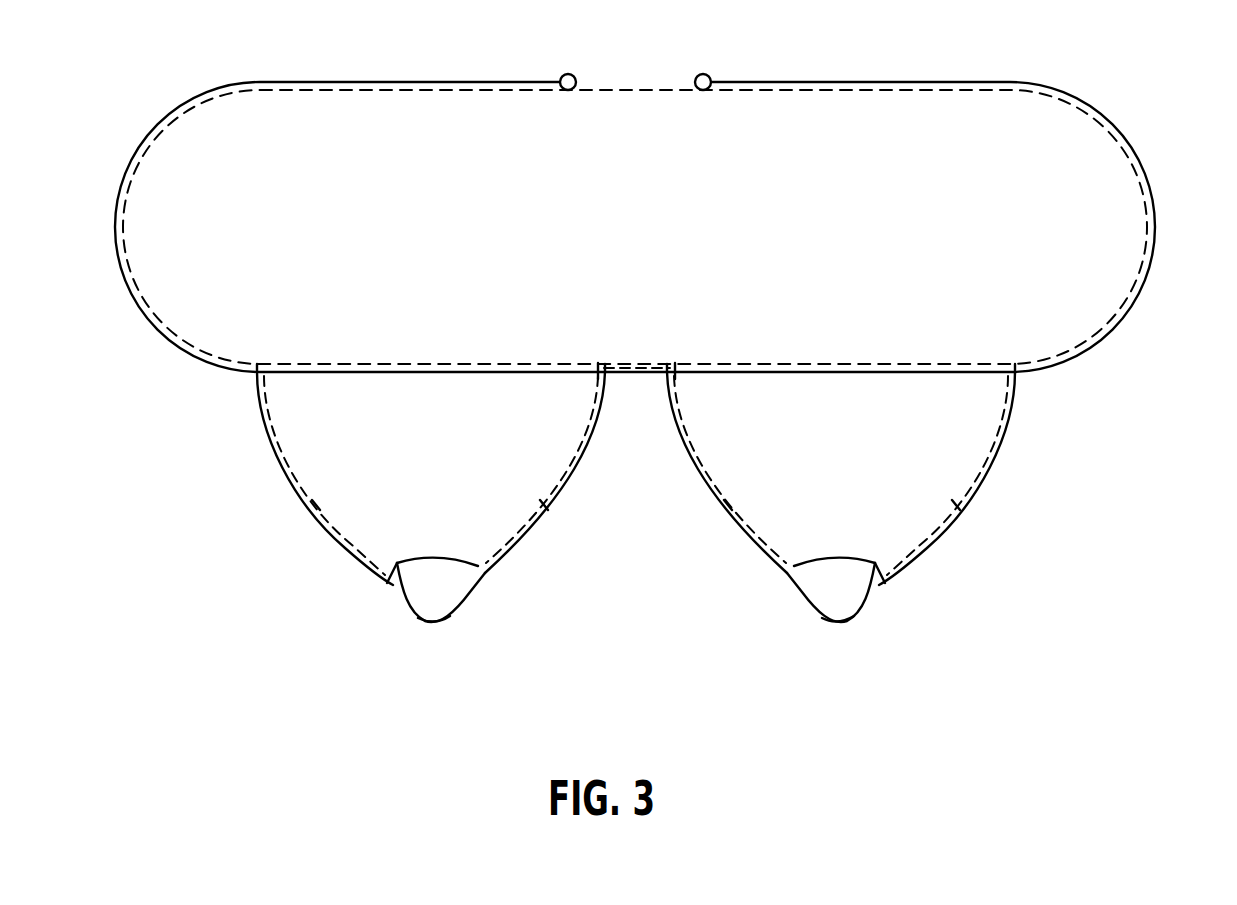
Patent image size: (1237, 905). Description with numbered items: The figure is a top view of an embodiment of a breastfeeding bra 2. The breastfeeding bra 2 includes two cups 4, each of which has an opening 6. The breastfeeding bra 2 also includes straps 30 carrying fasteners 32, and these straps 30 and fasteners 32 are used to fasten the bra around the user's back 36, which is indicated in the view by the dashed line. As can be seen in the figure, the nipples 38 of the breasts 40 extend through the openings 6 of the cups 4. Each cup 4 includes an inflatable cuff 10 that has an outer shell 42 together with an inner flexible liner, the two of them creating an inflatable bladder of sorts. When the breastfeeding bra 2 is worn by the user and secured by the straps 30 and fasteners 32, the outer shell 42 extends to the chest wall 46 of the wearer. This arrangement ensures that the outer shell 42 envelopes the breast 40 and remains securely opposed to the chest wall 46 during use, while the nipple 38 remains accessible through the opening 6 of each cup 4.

The breastfeeding bra 2 is at (673, 199).
The cup 4 is at (325, 445).
The opening 6 is at (395, 585).
The inflatable cuff 10 is at (263, 425).
The strap 30 is at (948, 82).
The fastener 32 is at (566, 73).
The user's back 36 is at (637, 92).
The nipple 38 is at (440, 598).
The breast 40 is at (315, 506).
The outer shell 42 is at (432, 405).
The chest wall 46 is at (641, 365).